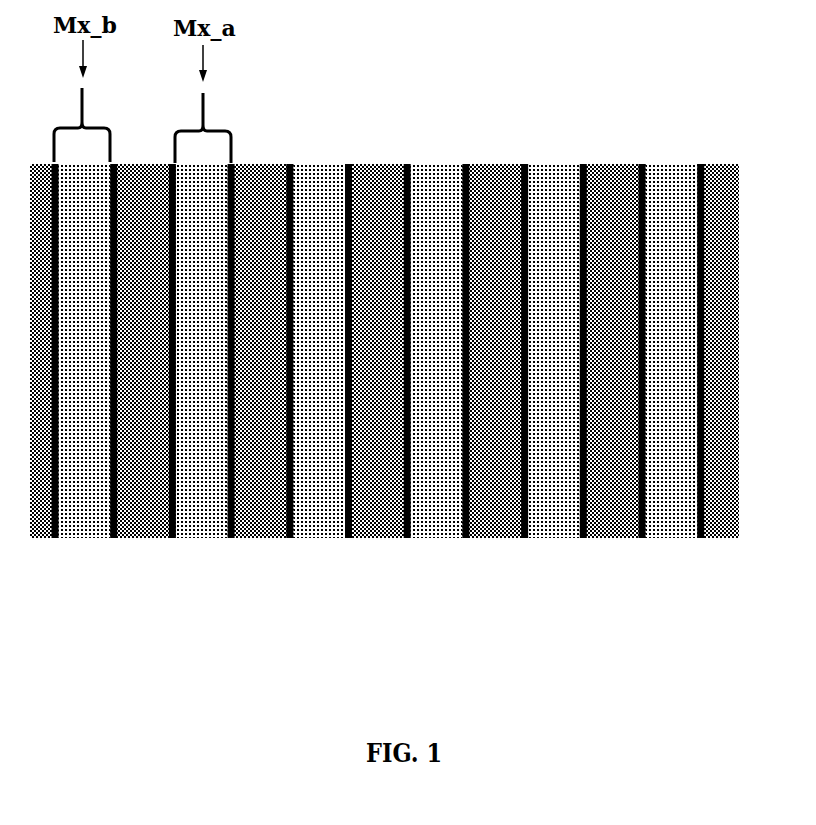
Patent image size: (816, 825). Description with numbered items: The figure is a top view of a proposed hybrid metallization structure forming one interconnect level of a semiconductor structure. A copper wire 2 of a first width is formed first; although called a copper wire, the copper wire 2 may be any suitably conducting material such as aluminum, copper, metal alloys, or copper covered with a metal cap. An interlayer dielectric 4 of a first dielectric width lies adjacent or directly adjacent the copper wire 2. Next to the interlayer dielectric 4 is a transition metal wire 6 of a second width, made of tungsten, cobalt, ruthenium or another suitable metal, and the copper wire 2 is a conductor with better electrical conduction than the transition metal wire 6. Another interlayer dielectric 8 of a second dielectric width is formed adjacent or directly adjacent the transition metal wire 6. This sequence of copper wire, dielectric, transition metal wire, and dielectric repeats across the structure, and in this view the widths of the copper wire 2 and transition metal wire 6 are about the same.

The copper wire 2 is at (83, 523).
The interlayer dielectric 4 is at (147, 523).
The transition metal wire 6 is at (198, 523).
The another ILD 8 is at (265, 533).